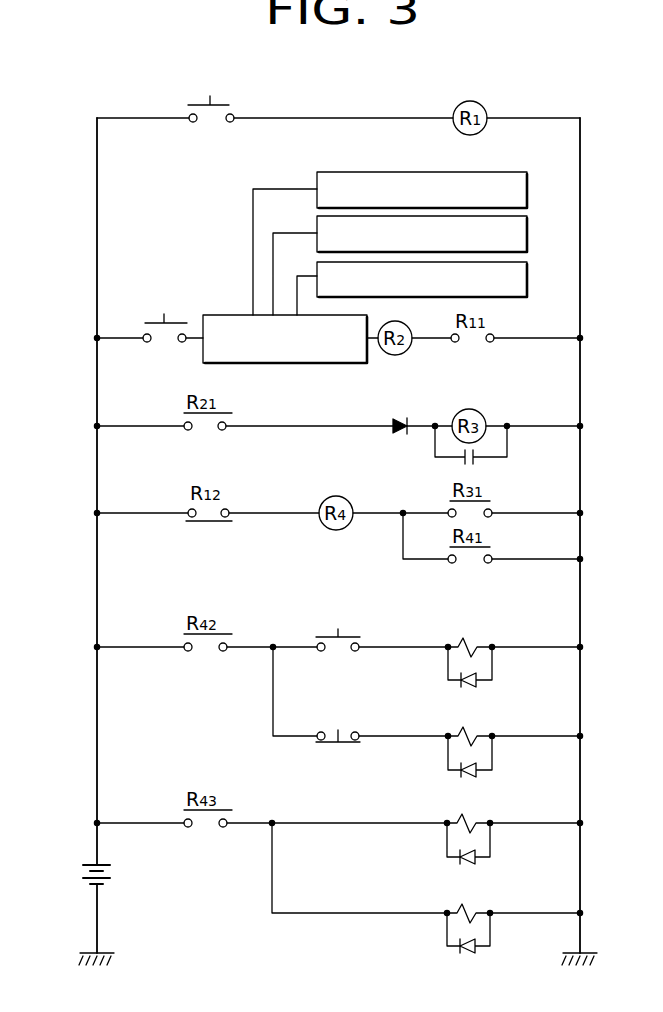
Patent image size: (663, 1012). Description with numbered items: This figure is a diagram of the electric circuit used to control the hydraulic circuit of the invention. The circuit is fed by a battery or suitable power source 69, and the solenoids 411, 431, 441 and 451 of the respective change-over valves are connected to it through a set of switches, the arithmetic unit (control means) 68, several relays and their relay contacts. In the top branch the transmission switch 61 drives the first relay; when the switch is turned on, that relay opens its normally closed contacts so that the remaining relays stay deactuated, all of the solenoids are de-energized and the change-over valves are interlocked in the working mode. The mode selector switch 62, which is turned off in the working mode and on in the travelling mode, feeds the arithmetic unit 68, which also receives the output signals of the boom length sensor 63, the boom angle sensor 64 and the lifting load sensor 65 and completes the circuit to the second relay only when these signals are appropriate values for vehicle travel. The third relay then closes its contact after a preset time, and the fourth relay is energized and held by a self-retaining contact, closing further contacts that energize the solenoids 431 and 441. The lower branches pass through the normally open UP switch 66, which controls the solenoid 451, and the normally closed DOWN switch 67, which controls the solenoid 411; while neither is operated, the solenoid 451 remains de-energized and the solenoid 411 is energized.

The transmission switch 61 is at (229, 104).
The mode selector switch 62 is at (182, 322).
The boom length sensor 63 is at (529, 191).
The boom angle sensor 64 is at (529, 236).
The lifting load sensor 65 is at (529, 282).
The UP switch 66 is at (340, 634).
The DOWN switch 67 is at (343, 745).
The arithmetic unit 68 is at (318, 364).
The battery 69 is at (94, 863).
The solenoid 451 is at (467, 641).
The solenoid 411 is at (466, 730).
The solenoid 431 is at (465, 817).
The solenoid 441 is at (465, 907).